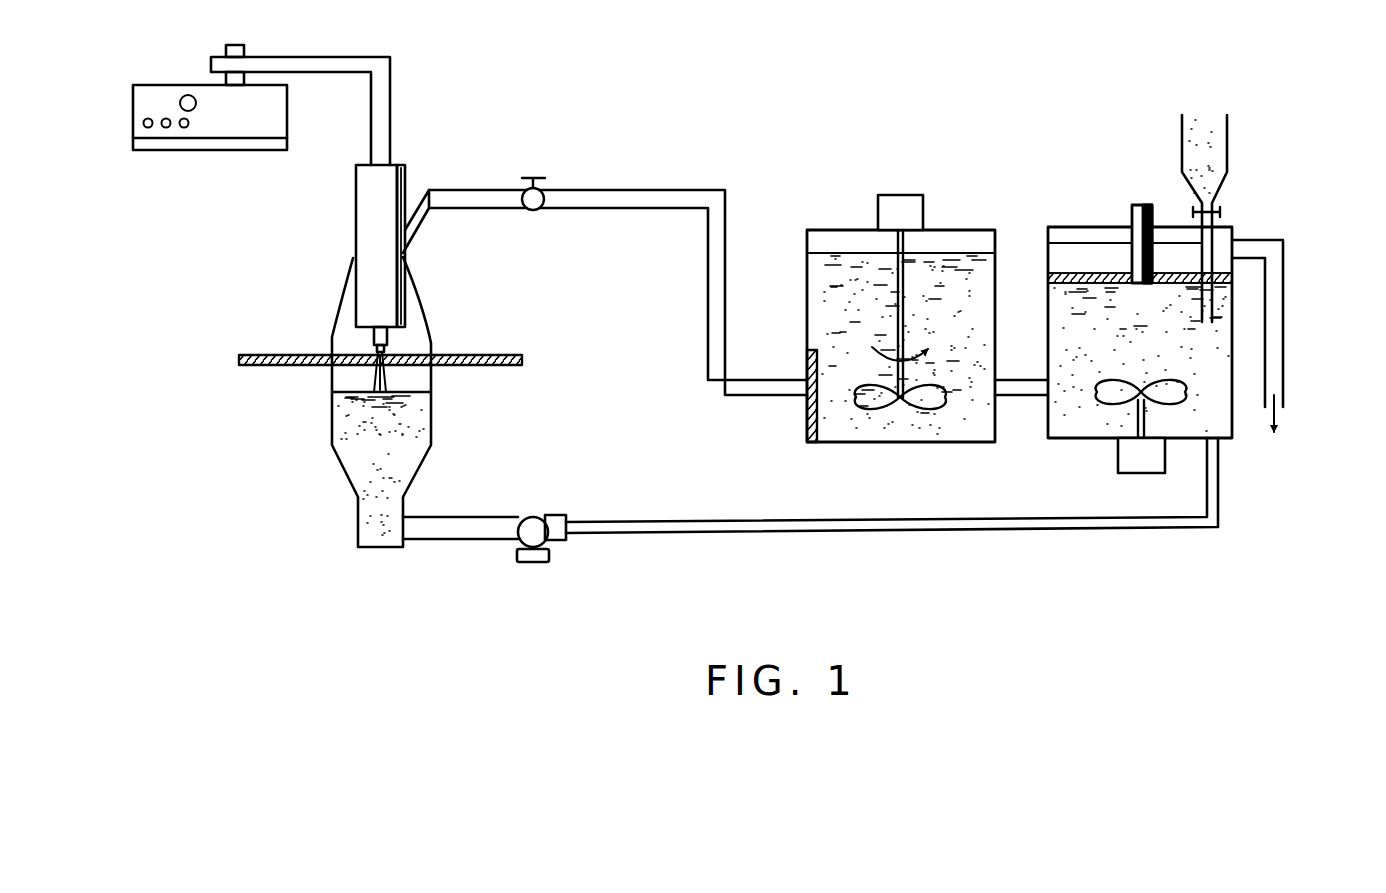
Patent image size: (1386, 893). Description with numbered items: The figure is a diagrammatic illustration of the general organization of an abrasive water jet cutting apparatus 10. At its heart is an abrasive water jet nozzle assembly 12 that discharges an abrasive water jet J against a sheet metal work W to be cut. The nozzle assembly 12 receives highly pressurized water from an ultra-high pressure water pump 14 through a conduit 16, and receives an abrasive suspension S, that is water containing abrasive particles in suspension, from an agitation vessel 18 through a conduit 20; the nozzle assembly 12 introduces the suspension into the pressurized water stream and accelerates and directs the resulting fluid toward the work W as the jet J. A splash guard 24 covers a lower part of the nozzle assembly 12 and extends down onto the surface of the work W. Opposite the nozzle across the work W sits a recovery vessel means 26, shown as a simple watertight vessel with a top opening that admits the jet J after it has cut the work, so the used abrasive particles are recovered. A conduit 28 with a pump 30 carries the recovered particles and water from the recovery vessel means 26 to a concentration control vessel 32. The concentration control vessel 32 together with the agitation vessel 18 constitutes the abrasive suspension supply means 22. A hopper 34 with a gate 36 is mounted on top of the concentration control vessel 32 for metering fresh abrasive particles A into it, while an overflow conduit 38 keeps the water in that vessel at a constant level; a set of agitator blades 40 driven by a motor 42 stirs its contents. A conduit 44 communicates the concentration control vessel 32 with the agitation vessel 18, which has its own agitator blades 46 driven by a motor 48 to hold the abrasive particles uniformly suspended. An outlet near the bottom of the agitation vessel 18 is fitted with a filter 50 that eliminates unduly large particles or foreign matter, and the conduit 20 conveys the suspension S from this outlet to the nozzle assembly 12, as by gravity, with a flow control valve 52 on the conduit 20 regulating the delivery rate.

The abrasive water jet cutting apparatus 10 is at (815, 160).
The abrasive water jet nozzle assembly 12 is at (356, 199).
The ultra-high pressure water pump 14 is at (203, 152).
The conduit 16 is at (392, 82).
The agitation vessel 18 is at (898, 444).
The conduit 20 is at (630, 210).
The abrasive suspension supply means 22 is at (1066, 214).
The splash guard 24 is at (330, 323).
The recovery vessel means 26 is at (433, 412).
The conduit 28 is at (455, 540).
The pump 30 is at (532, 519).
The concentration control vessel 32 is at (1226, 441).
The hopper 34 is at (1229, 151).
The gate 36 is at (1223, 208).
The overflow conduit 38 is at (1286, 340).
The agitator blades 40 is at (1147, 384).
The motor 42 is at (1118, 465).
The conduit 44 is at (1025, 398).
The agitator blades 46 is at (935, 392).
The motor 48 is at (923, 212).
The filter 50 is at (805, 420).
The flow control valve 52 is at (532, 212).
The abrasive particles A is at (1200, 118).
The abrasive water jet J is at (388, 351).
The abrasive suspension S is at (807, 273).
The sheet metal work W is at (283, 367).